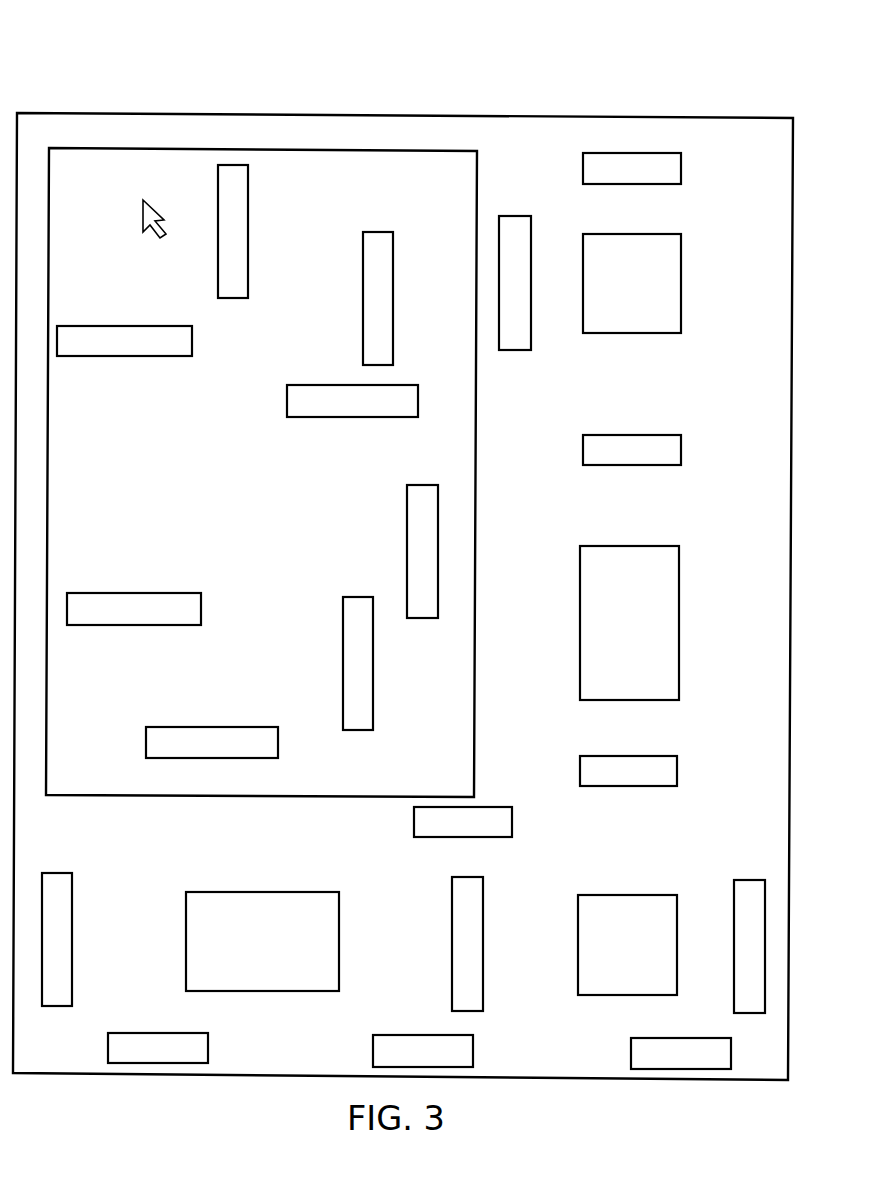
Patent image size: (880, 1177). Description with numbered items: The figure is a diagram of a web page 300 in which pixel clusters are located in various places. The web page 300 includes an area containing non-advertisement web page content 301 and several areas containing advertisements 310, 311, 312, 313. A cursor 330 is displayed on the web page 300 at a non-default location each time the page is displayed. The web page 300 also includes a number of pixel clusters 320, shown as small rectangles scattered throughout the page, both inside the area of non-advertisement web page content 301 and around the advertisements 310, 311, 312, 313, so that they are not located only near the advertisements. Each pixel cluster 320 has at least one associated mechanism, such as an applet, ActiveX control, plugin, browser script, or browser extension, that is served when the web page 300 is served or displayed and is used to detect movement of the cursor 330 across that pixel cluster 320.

The web page 300 is at (100, 75).
The non-advertisement web page content 301 is at (278, 551).
The advertisement 310 is at (650, 307).
The advertisement 311 is at (645, 650).
The advertisement 312 is at (645, 971).
The advertisement 313 is at (278, 967).
The pixel cluster 320 is at (248, 224).
The cursor 330 is at (141, 208).